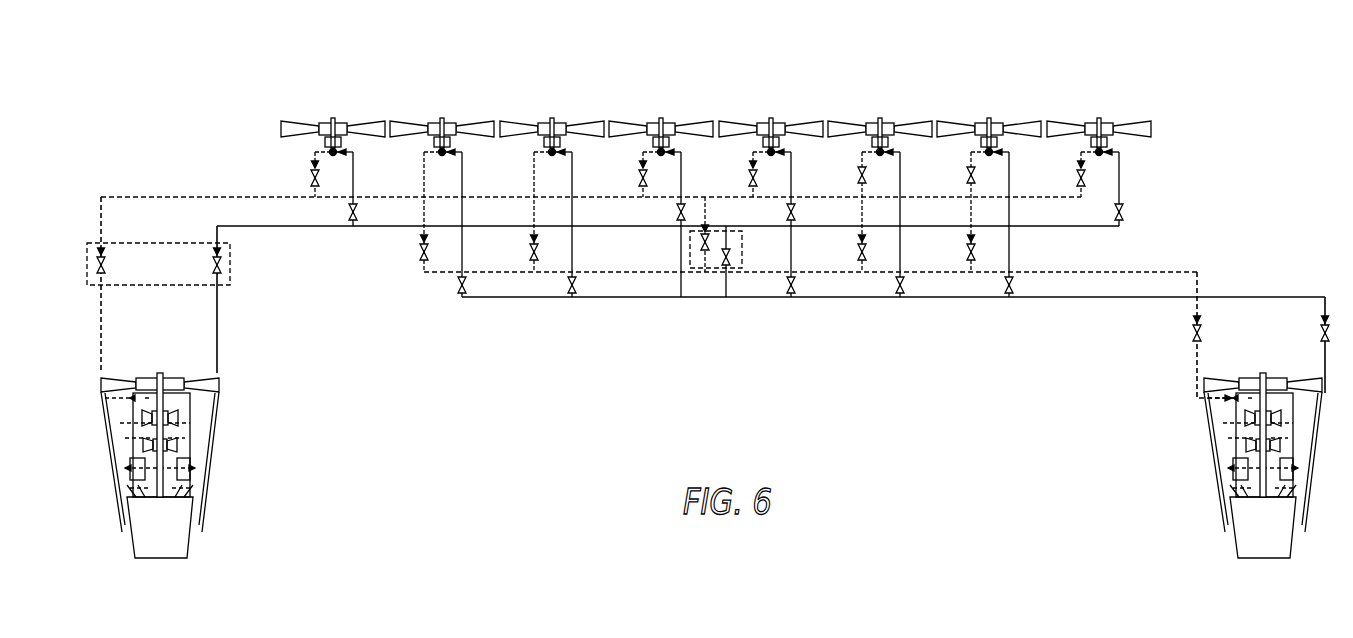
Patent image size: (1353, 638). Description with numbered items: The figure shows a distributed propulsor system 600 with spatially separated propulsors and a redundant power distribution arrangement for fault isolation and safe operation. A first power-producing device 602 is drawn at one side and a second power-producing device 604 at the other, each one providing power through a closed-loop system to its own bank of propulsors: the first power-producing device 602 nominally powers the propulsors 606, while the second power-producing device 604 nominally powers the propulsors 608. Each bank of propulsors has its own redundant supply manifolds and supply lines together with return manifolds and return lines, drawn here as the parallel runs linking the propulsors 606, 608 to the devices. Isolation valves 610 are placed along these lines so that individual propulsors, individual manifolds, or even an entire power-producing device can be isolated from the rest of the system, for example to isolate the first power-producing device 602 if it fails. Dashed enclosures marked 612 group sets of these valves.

The distributed propulsor system 600 is at (1225, 78).
The first power-producing device 602 is at (236, 515).
The second power-producing device 604 is at (1186, 511).
The propulsors 606 is at (362, 108).
The propulsors 608 is at (471, 108).
The isolation valves 610 is at (350, 212).
The valve assembly 612 is at (168, 243).